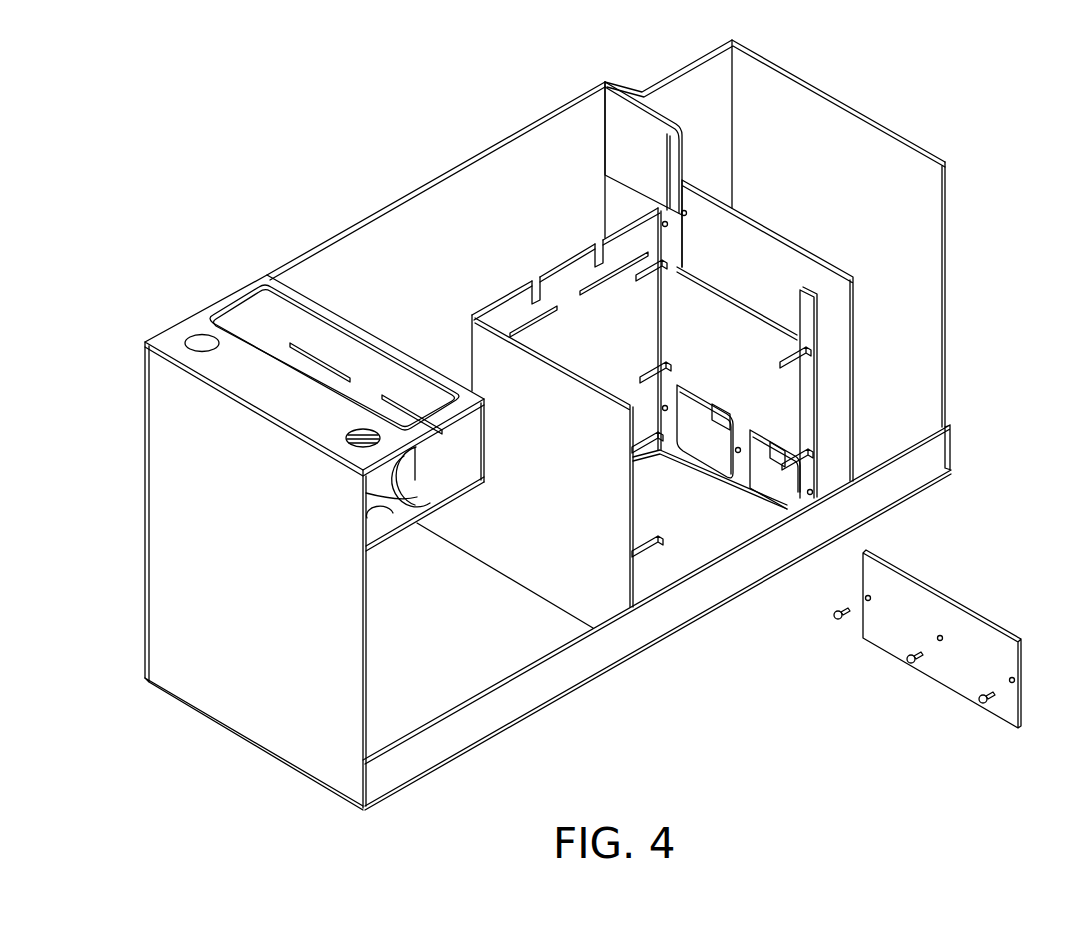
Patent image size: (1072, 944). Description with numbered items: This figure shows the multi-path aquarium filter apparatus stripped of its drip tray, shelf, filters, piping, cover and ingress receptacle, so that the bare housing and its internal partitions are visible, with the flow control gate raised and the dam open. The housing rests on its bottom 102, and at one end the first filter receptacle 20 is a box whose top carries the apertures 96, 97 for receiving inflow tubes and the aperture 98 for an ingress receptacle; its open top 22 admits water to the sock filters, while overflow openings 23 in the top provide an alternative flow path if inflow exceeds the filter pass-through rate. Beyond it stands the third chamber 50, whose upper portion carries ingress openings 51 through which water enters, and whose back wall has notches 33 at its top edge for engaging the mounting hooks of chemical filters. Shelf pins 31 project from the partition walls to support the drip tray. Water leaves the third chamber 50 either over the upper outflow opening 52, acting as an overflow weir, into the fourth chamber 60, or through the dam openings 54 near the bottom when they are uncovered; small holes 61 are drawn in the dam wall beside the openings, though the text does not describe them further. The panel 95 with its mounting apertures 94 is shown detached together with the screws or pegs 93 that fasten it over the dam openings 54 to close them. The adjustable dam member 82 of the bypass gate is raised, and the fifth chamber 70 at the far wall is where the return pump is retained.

The first filter receptacle 20 is at (252, 322).
The open top 22 is at (402, 478).
The overflow opening 23 is at (381, 398).
The shelf pin 31 is at (657, 272).
The notch 33 is at (595, 243).
The third chamber 50 is at (700, 545).
The ingress opening 51 is at (540, 317).
The upper outflow opening 52 is at (723, 291).
The dam opening 54 is at (773, 492).
The fourth chamber 60 is at (848, 432).
The mounting hole 61 is at (812, 493).
The fifth chamber 70 is at (878, 438).
The adjustable dam member 82 is at (623, 121).
The screw or peg 93 is at (980, 700).
The mounting aperture 94 is at (1012, 681).
The panel 95 is at (1021, 647).
The aperture 96 is at (200, 342).
The aperture 97 is at (363, 430).
The aperture 98 is at (387, 518).
The bottom 102 is at (450, 657).